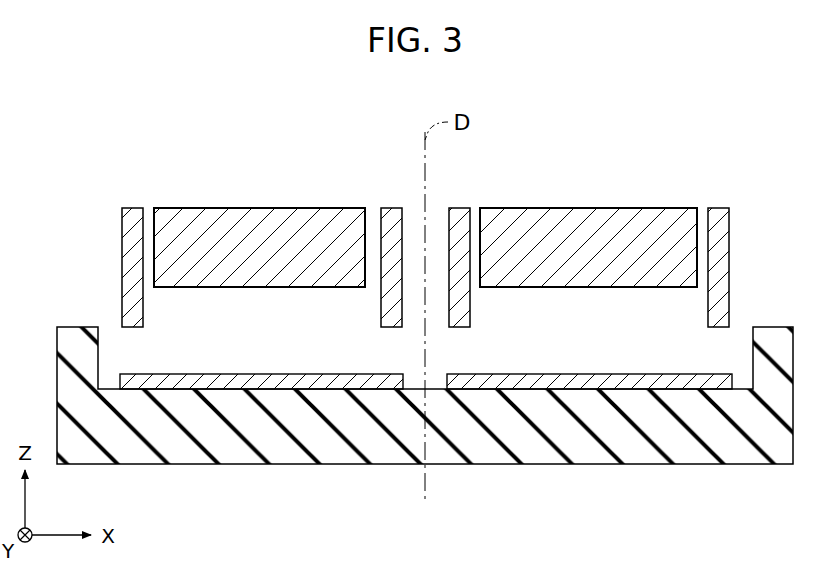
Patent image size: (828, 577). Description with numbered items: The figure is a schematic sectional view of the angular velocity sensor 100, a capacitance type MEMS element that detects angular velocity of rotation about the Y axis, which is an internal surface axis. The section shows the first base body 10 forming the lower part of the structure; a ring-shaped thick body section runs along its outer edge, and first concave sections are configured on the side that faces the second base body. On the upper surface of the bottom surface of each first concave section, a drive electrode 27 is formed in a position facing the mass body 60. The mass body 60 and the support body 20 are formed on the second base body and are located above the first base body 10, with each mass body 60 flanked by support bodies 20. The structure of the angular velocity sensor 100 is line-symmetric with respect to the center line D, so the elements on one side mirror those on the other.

The angular velocity sensor 100 is at (756, 159).
The first base body 10 is at (773, 327).
The support body 20 is at (136, 208).
The drive electrode 27 is at (256, 374).
The mass body 60 is at (265, 208).